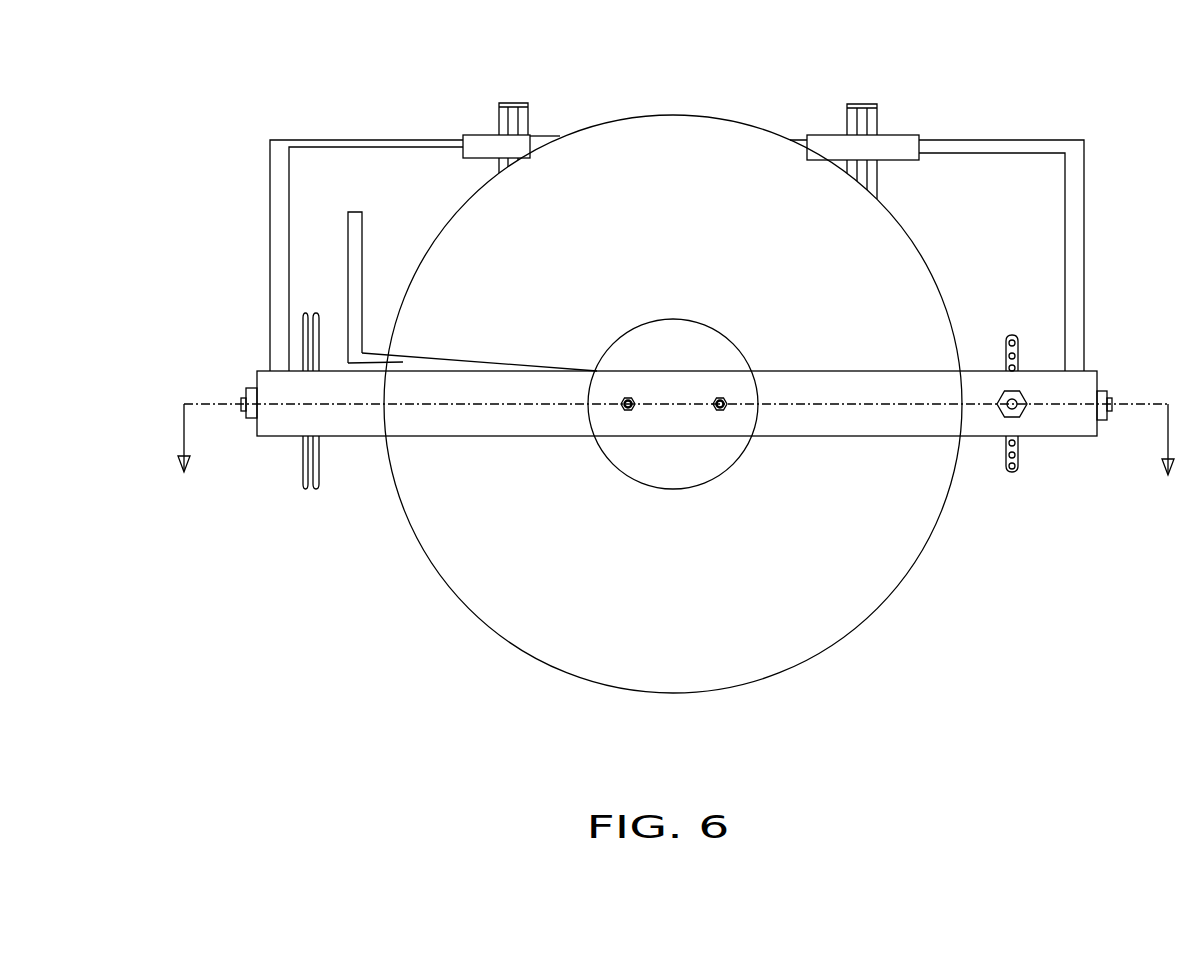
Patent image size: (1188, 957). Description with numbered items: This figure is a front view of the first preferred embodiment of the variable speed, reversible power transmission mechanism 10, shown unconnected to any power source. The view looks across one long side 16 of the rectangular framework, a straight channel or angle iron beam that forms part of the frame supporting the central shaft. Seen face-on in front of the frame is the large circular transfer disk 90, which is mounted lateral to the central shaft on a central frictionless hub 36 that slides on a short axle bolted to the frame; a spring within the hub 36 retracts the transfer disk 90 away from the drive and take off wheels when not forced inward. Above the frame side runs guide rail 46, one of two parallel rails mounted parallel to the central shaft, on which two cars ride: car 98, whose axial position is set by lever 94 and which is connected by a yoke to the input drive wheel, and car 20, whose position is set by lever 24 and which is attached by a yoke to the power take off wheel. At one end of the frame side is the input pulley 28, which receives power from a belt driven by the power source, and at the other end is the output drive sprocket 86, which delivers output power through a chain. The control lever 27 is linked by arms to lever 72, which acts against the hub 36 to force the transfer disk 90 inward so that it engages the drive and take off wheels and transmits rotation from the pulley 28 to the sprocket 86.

The variable speed, reversible power transmission mechanism 10 is at (673, 100).
The long side of framework 16 is at (293, 385).
The car 20 is at (895, 147).
The lever 24 is at (871, 104).
The control lever 27 is at (348, 260).
The pulley 28 is at (300, 468).
The hub 36 is at (710, 488).
The guide rail 46 is at (330, 140).
The lever 72 is at (403, 361).
The output drive sprocket 86 is at (1015, 470).
The transfer disk 90 is at (528, 598).
The lever 94 is at (527, 105).
The car 98 is at (485, 142).